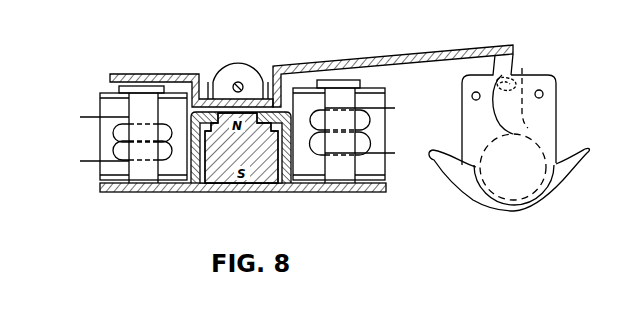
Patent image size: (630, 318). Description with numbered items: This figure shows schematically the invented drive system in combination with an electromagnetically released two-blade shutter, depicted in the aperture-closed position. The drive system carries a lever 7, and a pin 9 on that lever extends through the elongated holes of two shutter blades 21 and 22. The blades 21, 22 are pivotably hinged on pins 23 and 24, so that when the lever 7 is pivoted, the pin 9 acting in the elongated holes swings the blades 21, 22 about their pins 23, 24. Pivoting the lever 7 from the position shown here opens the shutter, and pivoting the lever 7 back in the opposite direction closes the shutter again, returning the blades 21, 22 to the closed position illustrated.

The lever 7 is at (366, 62).
The pin 9 is at (511, 82).
The blade 21 is at (453, 170).
The blade 22 is at (565, 165).
The pin 23 is at (474, 92).
The pin 24 is at (543, 91).